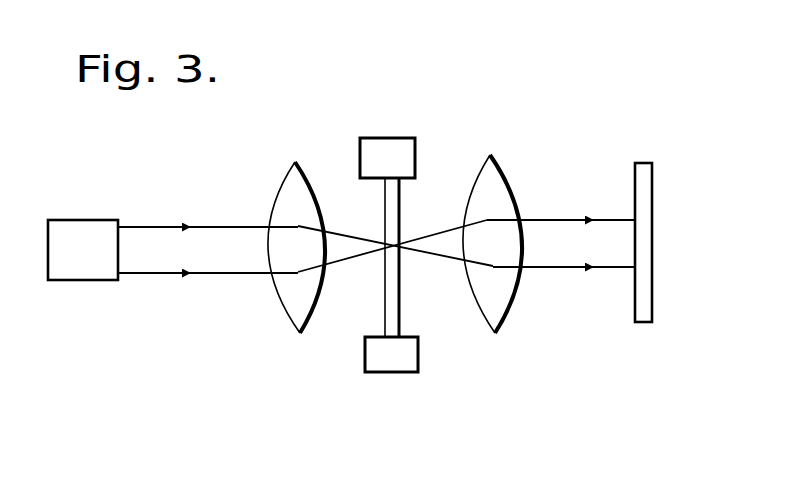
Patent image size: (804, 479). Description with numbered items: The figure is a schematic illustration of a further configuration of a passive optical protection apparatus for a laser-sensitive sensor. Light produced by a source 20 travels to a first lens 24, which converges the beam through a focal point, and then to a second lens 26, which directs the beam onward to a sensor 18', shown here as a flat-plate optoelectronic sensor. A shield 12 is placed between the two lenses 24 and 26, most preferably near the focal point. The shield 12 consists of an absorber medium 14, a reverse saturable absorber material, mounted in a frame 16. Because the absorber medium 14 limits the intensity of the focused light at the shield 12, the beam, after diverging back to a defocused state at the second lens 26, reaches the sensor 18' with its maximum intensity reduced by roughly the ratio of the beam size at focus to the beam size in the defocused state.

The shield 12 is at (338, 170).
The source 20 is at (118, 282).
The first lens 24 is at (298, 335).
The absorber medium 14 is at (397, 296).
The frame 16 is at (418, 372).
The second lens 26 is at (505, 322).
The sensor 18' is at (665, 266).